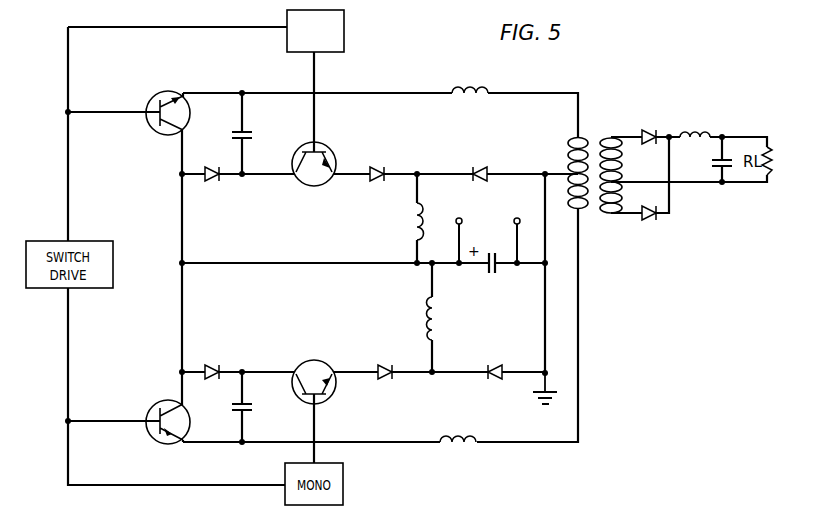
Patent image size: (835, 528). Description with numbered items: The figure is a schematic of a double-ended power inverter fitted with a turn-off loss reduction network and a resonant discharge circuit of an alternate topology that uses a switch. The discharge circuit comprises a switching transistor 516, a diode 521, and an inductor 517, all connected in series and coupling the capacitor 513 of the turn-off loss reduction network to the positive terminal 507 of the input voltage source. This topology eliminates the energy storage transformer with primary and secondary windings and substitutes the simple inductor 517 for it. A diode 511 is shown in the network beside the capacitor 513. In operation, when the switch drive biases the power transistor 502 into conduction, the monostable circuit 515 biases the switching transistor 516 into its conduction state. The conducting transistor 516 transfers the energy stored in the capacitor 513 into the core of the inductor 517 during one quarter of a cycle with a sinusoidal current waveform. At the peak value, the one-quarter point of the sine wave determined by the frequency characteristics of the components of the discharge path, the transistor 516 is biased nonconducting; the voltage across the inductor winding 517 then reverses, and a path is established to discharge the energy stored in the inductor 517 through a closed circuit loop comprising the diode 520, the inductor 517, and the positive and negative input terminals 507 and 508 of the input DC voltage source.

The power transistor 502 is at (164, 103).
The capacitor 513 is at (253, 135).
The monostable circuit 515 is at (345, 33).
The diode 511 is at (215, 185).
The switching transistor 516 is at (314, 173).
The diode 521 is at (381, 164).
The diode 520 is at (482, 164).
The inductor 517 is at (405, 221).
The positive terminal 507 is at (461, 230).
The negative input terminal 508 is at (519, 230).